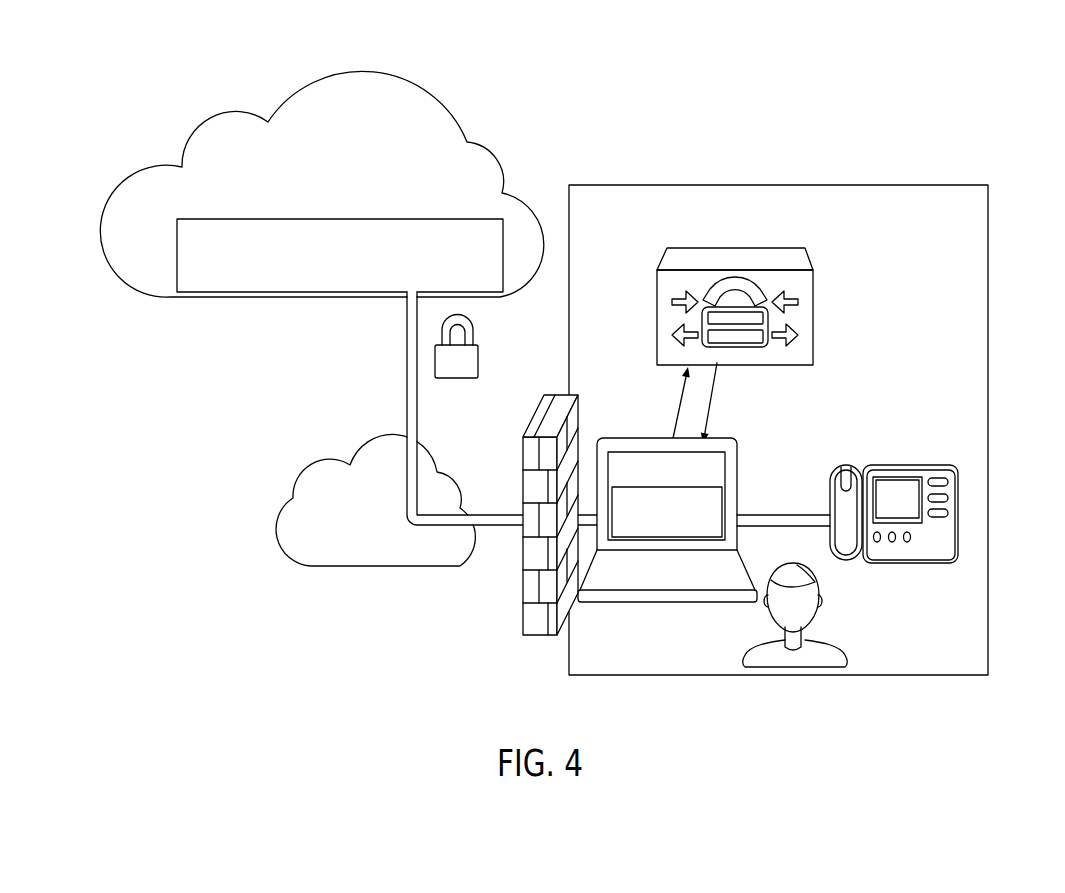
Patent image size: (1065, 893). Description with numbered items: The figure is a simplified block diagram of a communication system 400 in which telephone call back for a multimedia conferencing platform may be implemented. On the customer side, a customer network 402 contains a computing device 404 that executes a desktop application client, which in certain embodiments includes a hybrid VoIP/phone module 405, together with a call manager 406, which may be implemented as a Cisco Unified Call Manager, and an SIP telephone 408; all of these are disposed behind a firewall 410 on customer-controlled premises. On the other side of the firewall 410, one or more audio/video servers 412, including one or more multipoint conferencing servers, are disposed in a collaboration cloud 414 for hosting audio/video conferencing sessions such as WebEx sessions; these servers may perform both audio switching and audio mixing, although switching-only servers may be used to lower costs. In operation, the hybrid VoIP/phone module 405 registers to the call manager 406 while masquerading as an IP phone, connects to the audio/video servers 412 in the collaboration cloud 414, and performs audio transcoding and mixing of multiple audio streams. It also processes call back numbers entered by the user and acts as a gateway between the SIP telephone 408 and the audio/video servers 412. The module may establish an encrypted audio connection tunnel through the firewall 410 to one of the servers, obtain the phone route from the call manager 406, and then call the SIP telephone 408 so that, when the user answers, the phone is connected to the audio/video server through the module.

The communication system 400 is at (116, 128).
The customer network 402 is at (978, 271).
The computing device 404 is at (679, 520).
The hybrid VoIP/phone module 405 is at (718, 495).
The call manager 406 is at (813, 273).
The SIP telephone 408 is at (958, 492).
The firewall 410 is at (525, 610).
The audio/video servers 412 is at (232, 293).
The collaboration cloud 414 is at (467, 143).